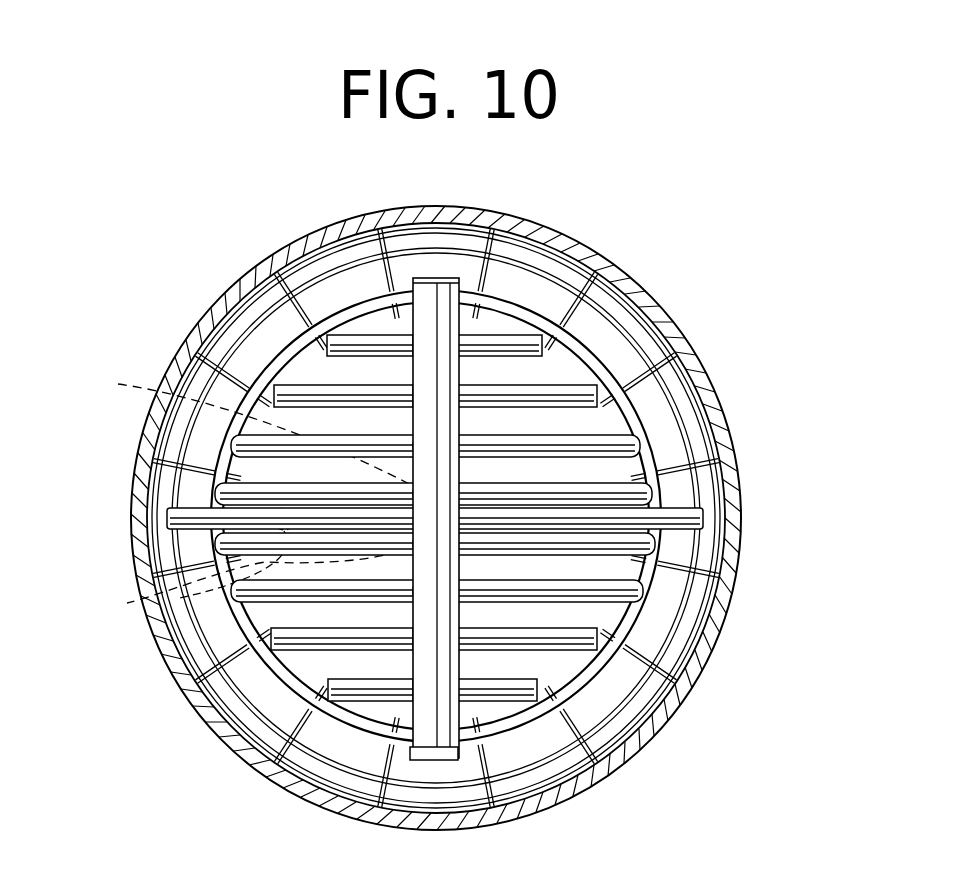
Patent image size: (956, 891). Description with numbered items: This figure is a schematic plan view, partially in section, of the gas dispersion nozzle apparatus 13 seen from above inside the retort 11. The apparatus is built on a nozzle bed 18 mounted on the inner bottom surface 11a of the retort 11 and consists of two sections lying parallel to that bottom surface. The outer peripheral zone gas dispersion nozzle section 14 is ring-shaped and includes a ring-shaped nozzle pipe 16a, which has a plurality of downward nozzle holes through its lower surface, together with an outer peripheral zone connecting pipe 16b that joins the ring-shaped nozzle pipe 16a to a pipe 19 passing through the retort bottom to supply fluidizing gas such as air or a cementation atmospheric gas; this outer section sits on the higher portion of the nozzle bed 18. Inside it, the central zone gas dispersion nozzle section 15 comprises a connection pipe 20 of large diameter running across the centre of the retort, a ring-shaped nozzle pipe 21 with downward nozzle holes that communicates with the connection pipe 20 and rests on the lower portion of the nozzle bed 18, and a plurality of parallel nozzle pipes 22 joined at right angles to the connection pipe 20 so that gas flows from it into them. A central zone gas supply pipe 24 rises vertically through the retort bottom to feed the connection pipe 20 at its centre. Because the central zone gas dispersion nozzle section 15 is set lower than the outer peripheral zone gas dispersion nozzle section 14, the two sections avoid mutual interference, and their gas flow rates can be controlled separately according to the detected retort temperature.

The retort 11 is at (677, 330).
The inner bottom surface of the retort 11a is at (540, 290).
The gas dispersion nozzle apparatus 13 is at (560, 610).
The outer peripheral zone gas dispersion nozzle section 14 is at (677, 387).
The central zone gas dispersion nozzle section 15 is at (653, 600).
The ring-shaped nozzle pipe 16a is at (705, 482).
The outer peripheral zone connecting pipe 16b is at (697, 518).
The nozzle bed 18 is at (600, 316).
The pipe 19 is at (180, 598).
The connection pipe of a large diameter 20 is at (422, 715).
The ring-shaped nozzle pipe 21 is at (640, 425).
The nozzle pipes 22 is at (303, 390).
The gas supply pipe 24 is at (261, 488).